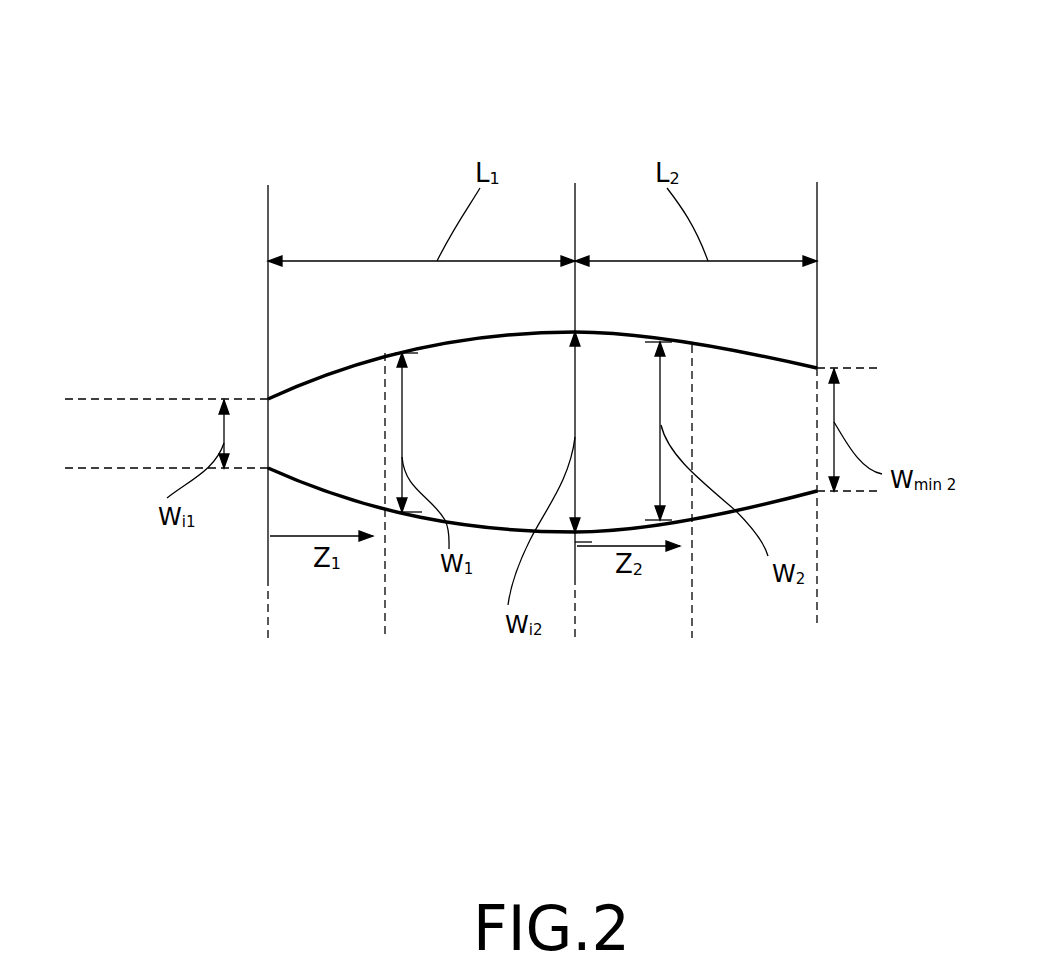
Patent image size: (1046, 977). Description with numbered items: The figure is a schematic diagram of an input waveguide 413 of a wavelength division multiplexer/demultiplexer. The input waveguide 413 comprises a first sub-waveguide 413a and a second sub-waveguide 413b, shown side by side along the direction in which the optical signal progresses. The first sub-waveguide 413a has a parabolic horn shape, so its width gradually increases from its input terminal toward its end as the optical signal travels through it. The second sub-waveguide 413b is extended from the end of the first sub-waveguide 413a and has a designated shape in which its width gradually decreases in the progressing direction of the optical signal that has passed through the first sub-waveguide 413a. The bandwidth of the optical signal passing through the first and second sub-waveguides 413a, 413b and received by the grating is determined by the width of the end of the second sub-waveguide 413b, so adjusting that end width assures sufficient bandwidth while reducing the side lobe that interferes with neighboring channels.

The input waveguide 413 is at (467, 51).
The first sub-waveguide 413a is at (272, 648).
The second sub-waveguide 413b is at (821, 648).